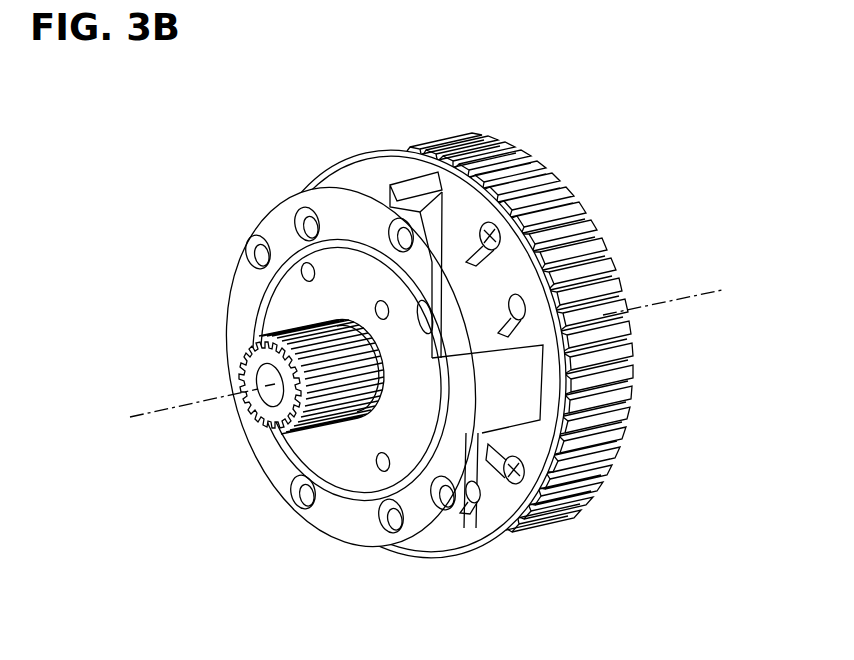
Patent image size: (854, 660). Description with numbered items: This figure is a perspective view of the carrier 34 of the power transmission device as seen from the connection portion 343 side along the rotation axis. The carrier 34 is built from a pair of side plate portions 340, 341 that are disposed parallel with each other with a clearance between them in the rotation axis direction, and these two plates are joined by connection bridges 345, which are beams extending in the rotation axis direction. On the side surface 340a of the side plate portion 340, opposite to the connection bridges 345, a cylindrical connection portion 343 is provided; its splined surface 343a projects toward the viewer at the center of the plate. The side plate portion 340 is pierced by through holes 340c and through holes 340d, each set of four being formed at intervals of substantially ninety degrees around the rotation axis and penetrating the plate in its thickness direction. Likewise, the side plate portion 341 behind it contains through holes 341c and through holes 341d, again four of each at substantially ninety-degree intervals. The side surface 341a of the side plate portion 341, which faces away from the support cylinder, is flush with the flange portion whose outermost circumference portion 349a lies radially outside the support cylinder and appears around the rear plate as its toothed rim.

The carrier 34 is at (212, 180).
The side plate portion 340 is at (234, 304).
The side surface 340a is at (247, 337).
The through holes 340c is at (440, 320).
The through holes 340d is at (400, 248).
The side plate portion 341 is at (381, 141).
The side surface 341a is at (373, 160).
The through holes 341c is at (520, 307).
The through holes 341d is at (500, 247).
The connection portion 343 is at (261, 437).
The splined shaft 343a is at (333, 420).
The connection bridges 345 is at (402, 160).
The outermost circumference portion 349a is at (440, 150).